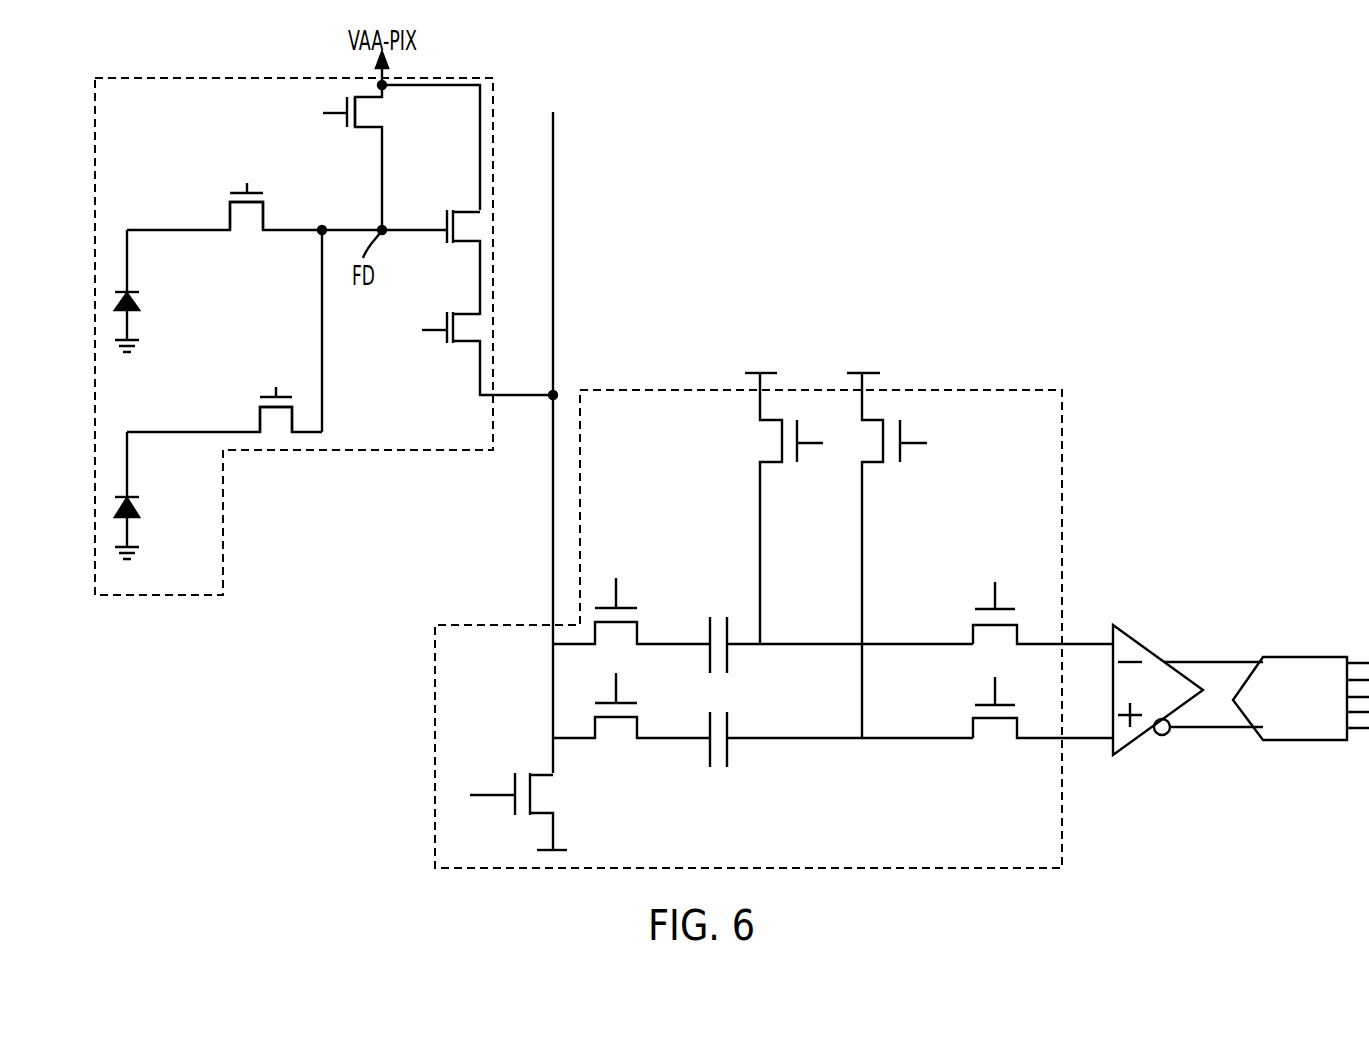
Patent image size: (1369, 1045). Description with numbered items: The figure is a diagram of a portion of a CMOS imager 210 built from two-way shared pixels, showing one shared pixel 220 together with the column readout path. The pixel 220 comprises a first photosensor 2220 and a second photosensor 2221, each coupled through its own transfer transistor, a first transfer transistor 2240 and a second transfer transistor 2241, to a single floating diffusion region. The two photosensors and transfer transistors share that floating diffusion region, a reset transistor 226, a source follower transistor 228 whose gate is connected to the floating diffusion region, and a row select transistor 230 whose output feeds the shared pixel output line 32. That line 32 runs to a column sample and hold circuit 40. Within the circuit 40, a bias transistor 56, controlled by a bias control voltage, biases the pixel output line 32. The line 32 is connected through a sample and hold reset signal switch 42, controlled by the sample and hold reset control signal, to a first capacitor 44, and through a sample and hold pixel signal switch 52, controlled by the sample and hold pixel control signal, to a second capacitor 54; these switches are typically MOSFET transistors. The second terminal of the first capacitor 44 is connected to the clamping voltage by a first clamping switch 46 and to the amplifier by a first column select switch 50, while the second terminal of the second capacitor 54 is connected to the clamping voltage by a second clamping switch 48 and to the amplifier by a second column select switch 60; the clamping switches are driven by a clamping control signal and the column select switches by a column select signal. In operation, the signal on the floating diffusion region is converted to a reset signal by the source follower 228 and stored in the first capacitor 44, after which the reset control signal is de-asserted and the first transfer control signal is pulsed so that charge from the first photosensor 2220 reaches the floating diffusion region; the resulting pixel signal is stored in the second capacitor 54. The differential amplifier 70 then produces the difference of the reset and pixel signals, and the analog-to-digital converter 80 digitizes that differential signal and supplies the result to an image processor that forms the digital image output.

The 2-way shared pixel 220 is at (116, 264).
The first photosensor 2220 is at (137, 300).
The second photosensor 2221 is at (137, 505).
The first transfer transistor 2240 is at (252, 214).
The second transfer transistor 2241 is at (262, 436).
The reset transistor 226 is at (344, 127).
The source follower transistor 228 is at (442, 238).
The row select transistor 230 is at (440, 345).
The pixel output line 32 is at (555, 296).
The CMOS imager 210 is at (978, 176).
The column sample and hold circuit 40 is at (1065, 465).
The sample and hold reset signal switch 42 is at (641, 622).
The first capacitor 44 is at (712, 616).
The first clamping switch 46 is at (783, 465).
The second clamping switch 48 is at (885, 465).
The first column select switch 50 is at (972, 624).
The sample and hold pixel signal switch 52 is at (640, 740).
The second capacitor 54 is at (729, 766).
The bias transistor 56 is at (552, 815).
The second column select switch 60 is at (976, 740).
The differential amplifier 70 is at (1122, 748).
The analog-to-digital converter 80 is at (1277, 742).